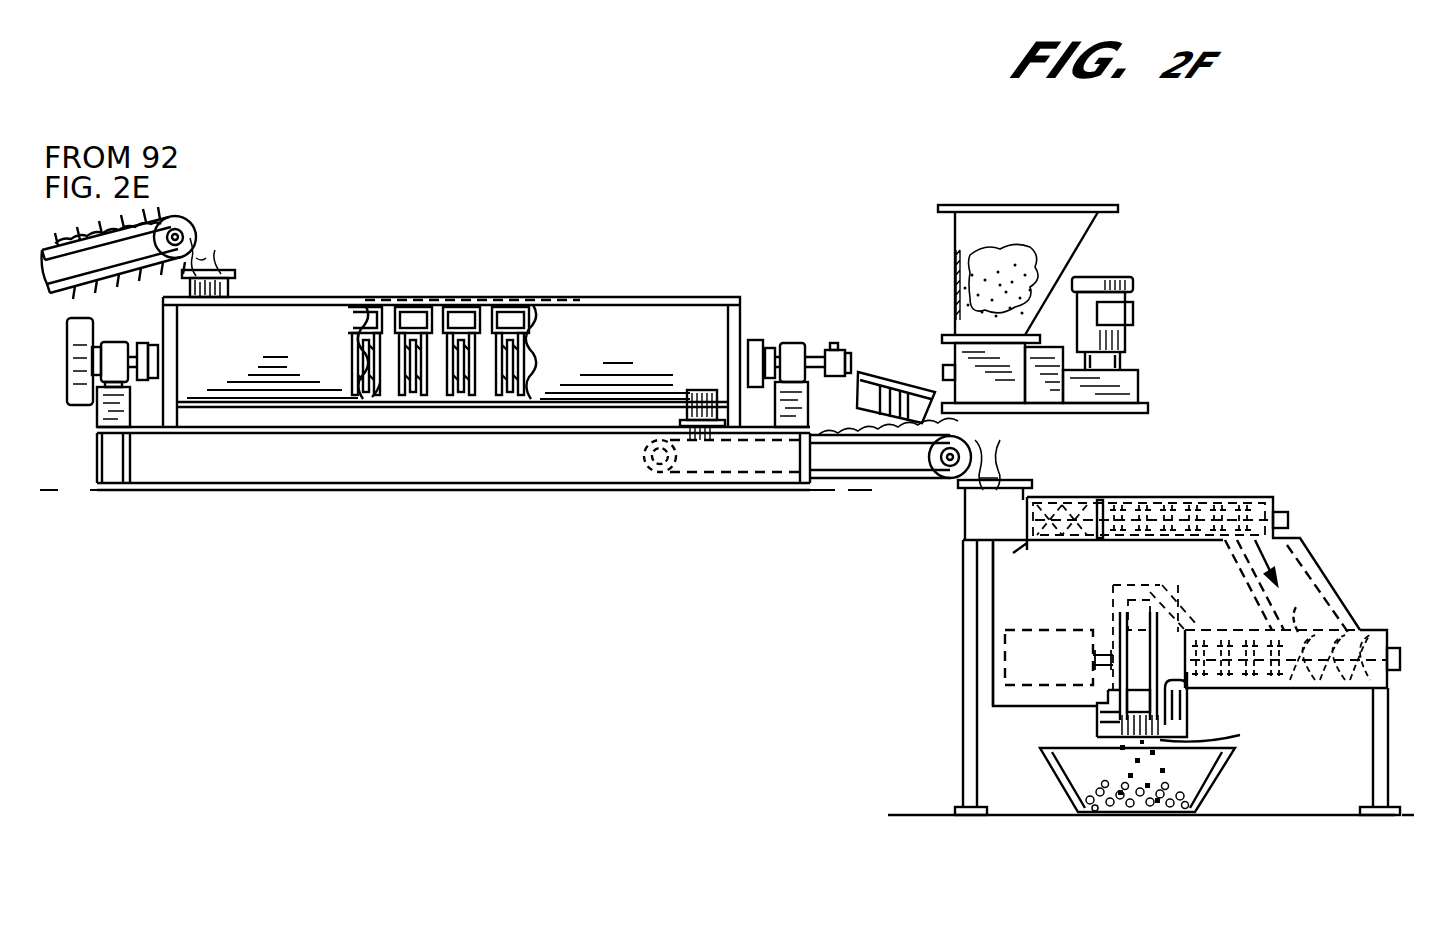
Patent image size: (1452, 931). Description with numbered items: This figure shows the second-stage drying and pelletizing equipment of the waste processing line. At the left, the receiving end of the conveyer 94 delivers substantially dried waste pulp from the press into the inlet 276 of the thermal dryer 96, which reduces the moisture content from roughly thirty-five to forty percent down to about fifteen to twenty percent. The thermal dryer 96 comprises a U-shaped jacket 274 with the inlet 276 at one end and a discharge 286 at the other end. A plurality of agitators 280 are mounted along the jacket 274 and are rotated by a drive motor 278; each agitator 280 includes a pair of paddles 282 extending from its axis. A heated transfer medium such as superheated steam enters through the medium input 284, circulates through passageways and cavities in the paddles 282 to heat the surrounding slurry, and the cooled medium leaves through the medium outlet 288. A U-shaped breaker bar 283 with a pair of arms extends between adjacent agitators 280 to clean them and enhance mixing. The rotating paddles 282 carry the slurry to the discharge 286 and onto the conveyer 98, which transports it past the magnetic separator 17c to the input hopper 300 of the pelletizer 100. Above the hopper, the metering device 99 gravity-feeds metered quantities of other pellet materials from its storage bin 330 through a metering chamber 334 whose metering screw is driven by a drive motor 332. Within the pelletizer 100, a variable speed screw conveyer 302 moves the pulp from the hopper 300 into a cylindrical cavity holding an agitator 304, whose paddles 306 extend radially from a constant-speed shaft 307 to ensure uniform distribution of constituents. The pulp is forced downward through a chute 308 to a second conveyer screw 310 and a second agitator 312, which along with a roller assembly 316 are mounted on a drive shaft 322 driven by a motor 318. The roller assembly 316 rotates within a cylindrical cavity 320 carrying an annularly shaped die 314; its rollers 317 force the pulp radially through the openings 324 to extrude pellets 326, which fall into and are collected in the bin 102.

The conveyer 94 is at (125, 340).
The thermal dryer 96 is at (451, 323).
The conveyer 98 is at (847, 477).
The metering device 99 is at (1087, 239).
The pelletizer 100 is at (1180, 515).
The bin 102 is at (1227, 770).
The magnetic separator 17c is at (912, 378).
The U-shaped jacket 274 is at (285, 328).
The inlet 276 is at (233, 282).
The drive motor 278 is at (68, 382).
The agitator 280 is at (373, 395).
The paddle 282 is at (400, 387).
The U-shaped breaker bar 283 is at (418, 308).
The medium input 284 is at (837, 343).
The discharge 286 is at (687, 412).
The medium outlet 288 is at (857, 360).
The input hopper 300 is at (975, 520).
The variable speed screw conveyer 302 is at (1032, 540).
The agitator 304 is at (1133, 523).
The paddle 306 is at (1127, 537).
The shaft 307 is at (1262, 497).
The chute 308 is at (1295, 580).
The second conveyer screw 310 is at (1368, 708).
The second agitator 312 is at (1352, 690).
The annularly shaped die 314 is at (1100, 720).
The roller assembly 316 is at (1098, 690).
The roller 317 is at (1187, 700).
The motor 318 is at (1065, 625).
The cylindrical cavity 320 is at (1130, 590).
The drive shaft 322 is at (1350, 640).
The opening 324 is at (1240, 735).
The pellets 326 is at (1120, 765).
The storage bin 330 is at (1080, 228).
The drive motor 332 is at (1125, 338).
The metering chamber 334 is at (1005, 395).